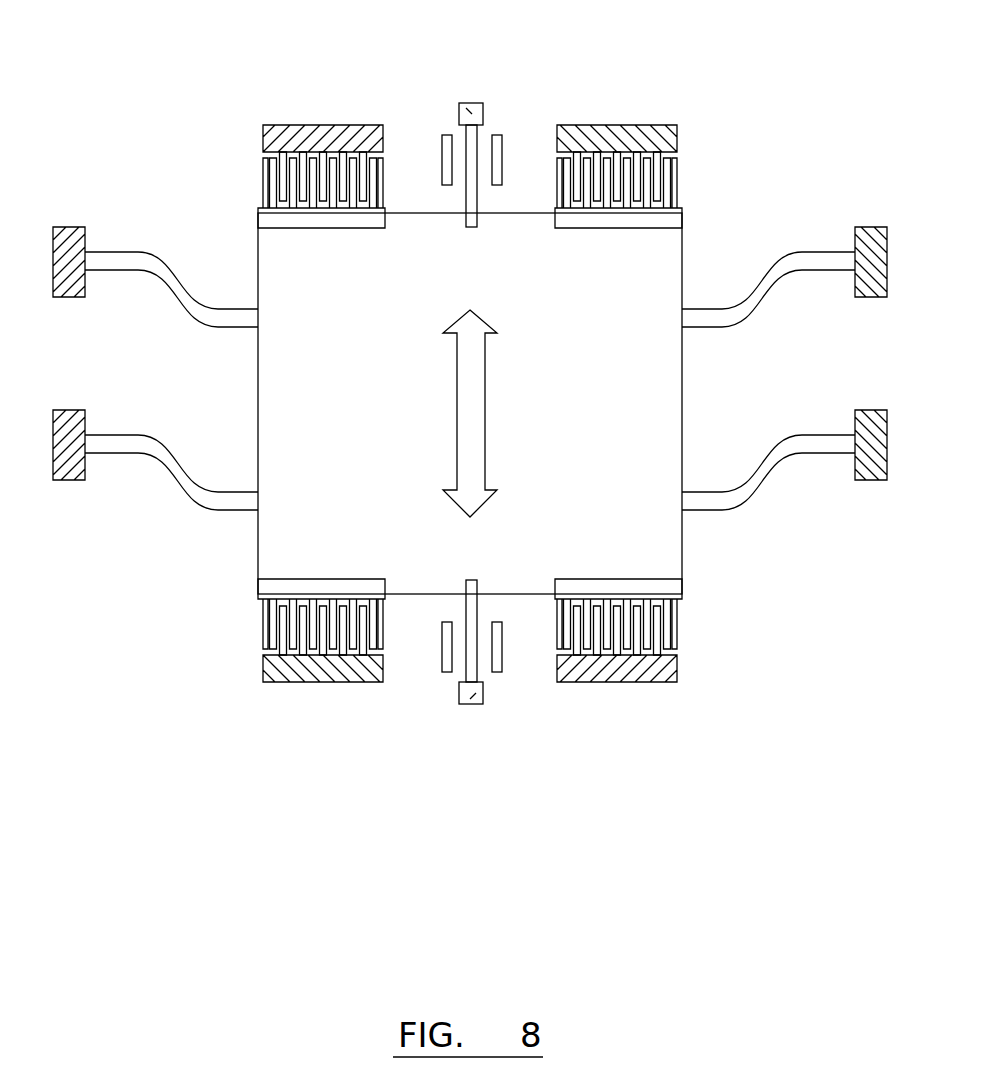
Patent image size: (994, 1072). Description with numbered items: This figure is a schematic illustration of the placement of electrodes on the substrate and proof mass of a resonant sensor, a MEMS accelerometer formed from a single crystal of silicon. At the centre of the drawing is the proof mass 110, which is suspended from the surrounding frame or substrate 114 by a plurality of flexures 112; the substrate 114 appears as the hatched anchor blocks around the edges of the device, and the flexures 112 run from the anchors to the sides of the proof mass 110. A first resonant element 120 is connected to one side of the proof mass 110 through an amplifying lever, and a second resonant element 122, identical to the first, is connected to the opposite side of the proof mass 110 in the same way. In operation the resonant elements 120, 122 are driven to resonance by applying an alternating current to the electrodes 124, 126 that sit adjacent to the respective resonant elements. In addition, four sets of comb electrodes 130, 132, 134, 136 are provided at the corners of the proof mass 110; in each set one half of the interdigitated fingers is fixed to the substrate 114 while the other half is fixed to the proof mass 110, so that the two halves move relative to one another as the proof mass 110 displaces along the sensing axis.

The proof mass 110 is at (663, 535).
The flexures 112 is at (172, 280).
The substrate 114 is at (312, 140).
The first resonant element 120 is at (473, 605).
The second resonant element 122 is at (474, 205).
The electrodes 124 is at (442, 665).
The electrodes 126 is at (441, 150).
The comb electrodes 130 is at (263, 627).
The comb electrodes 132 is at (680, 627).
The comb electrodes 134 is at (263, 182).
The comb electrodes 136 is at (677, 182).